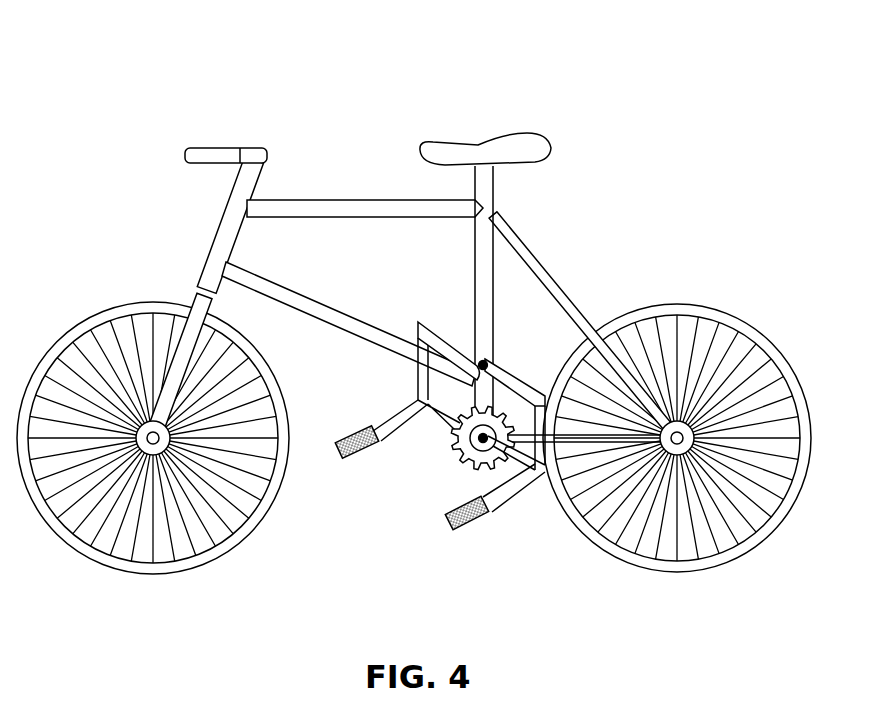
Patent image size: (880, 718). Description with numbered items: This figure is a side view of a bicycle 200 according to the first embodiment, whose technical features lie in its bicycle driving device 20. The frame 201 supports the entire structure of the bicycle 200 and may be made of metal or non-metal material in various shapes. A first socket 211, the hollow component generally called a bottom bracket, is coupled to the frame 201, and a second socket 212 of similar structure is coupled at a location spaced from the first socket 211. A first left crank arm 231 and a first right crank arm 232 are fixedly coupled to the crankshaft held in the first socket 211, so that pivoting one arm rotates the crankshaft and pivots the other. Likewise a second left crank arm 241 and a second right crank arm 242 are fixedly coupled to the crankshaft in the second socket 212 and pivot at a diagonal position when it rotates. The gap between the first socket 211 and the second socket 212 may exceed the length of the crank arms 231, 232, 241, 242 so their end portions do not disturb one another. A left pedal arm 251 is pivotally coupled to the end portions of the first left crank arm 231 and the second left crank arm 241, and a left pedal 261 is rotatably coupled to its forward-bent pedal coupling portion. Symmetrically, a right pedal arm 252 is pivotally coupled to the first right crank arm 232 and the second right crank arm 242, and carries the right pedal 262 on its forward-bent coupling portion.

The bicycle 200 is at (730, 95).
The bicycle driving device 20 is at (546, 579).
The frame 201 is at (477, 250).
The first socket 211 is at (463, 463).
The second socket 212 is at (487, 362).
The first left crank arm 231 is at (520, 458).
The first right crank arm 232 is at (437, 417).
The second left crank arm 241 is at (523, 376).
The second right crank arm 242 is at (440, 334).
The left pedal arm 251 is at (546, 477).
The right pedal arm 252 is at (417, 375).
The left pedal 261 is at (450, 532).
The right pedal 262 is at (337, 458).